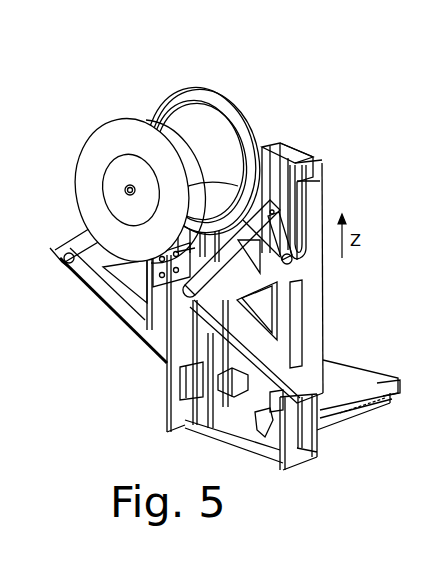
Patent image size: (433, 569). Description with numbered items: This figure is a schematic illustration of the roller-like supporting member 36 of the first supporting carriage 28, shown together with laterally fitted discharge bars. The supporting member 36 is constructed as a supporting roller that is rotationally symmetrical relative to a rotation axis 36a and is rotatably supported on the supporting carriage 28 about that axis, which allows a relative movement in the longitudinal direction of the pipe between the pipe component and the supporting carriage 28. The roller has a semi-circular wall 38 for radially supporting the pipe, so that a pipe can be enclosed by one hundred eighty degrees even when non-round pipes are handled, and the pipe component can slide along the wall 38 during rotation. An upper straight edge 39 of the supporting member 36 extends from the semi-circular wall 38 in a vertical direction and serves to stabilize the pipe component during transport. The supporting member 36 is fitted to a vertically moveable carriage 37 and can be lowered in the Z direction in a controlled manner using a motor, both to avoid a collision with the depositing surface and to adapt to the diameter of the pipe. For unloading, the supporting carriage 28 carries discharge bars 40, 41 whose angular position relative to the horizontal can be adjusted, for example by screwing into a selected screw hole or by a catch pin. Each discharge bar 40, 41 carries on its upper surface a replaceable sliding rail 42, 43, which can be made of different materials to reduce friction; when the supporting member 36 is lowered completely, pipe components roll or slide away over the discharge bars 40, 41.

The first supporting carriage 28 is at (262, 96).
The supporting member 36 is at (105, 145).
The rotation axis 36a is at (103, 178).
The vertically moveable carriage 37 is at (298, 150).
The semi-circular wall 38 is at (183, 128).
The upper straight edge 39 is at (197, 88).
The discharge bar 40 is at (187, 310).
The discharge bar 41 is at (82, 240).
The sliding rail 42 is at (157, 303).
The sliding rail 43 is at (53, 242).